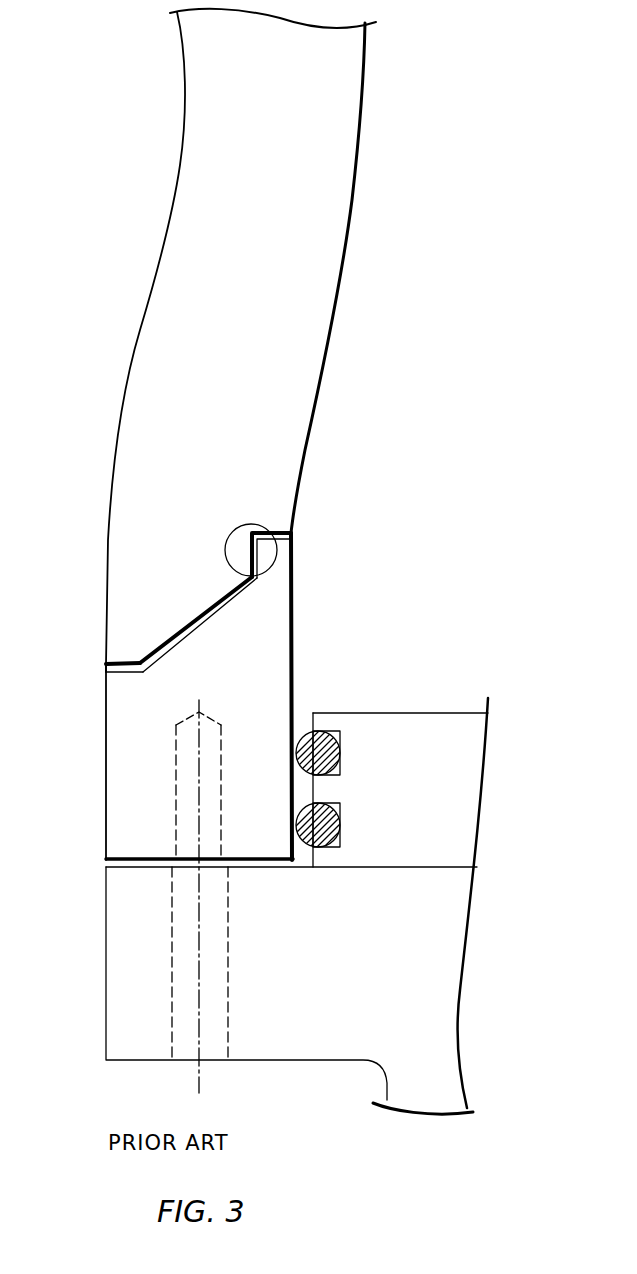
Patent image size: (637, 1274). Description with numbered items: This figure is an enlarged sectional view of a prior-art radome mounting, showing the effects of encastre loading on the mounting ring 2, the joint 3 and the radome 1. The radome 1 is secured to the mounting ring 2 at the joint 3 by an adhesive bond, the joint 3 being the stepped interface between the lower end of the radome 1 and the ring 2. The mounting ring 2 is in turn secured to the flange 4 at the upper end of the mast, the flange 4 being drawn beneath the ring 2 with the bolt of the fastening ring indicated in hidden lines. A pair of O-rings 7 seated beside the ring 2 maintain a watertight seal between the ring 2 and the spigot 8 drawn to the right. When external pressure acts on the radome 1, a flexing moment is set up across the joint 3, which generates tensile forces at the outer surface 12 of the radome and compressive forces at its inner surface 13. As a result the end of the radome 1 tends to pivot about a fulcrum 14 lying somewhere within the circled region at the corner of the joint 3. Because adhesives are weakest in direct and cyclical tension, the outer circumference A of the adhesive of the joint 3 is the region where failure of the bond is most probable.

The radome 1 is at (142, 493).
The mounting ring 2 is at (120, 745).
The joint 3 is at (183, 625).
The flange 4 is at (115, 920).
The '0' rings 7 is at (330, 748).
The spigot 8 is at (472, 785).
The outer surface 12 is at (105, 648).
The inner surface 13 is at (297, 512).
The fulcrum 14 is at (277, 548).
The outer circumference of the adhesive A is at (105, 668).